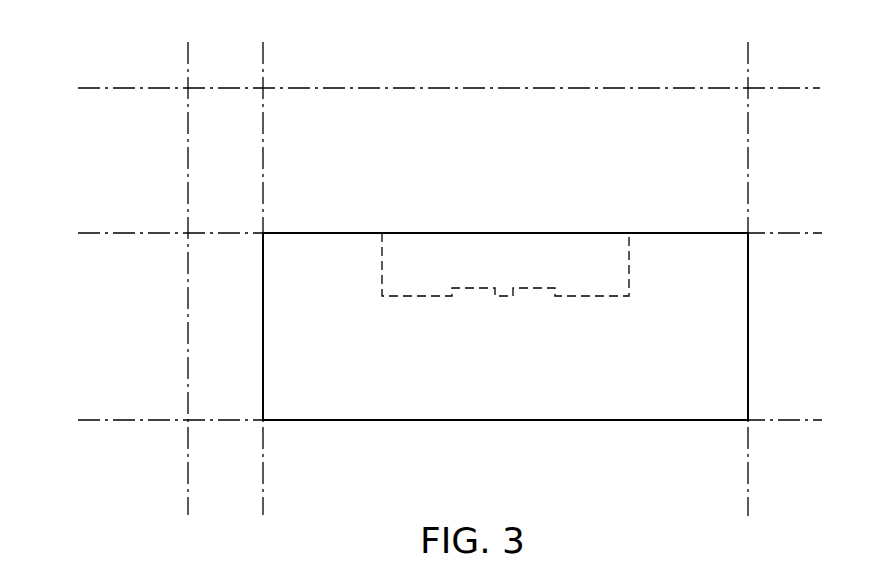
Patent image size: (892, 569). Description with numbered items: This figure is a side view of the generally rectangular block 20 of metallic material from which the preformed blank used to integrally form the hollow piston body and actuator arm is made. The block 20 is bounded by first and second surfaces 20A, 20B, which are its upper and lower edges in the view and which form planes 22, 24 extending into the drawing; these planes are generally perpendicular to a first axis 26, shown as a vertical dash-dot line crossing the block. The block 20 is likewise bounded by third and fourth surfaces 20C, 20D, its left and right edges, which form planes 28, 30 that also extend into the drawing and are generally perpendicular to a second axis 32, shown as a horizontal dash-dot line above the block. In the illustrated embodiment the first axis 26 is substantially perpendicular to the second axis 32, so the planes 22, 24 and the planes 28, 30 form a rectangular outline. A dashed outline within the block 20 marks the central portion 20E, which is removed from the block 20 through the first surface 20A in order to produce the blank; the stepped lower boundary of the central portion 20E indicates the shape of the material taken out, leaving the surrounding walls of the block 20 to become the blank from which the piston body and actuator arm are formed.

The block 20 is at (742, 356).
The first surface 20A is at (686, 233).
The second surface 20B is at (678, 420).
The third surface 20C is at (262, 290).
The fourth surface 20D is at (750, 297).
The central portion 20E is at (384, 255).
The plane 22 is at (91, 233).
The plane 24 is at (95, 420).
The first axis 26 is at (188, 136).
The plane 28 is at (263, 52).
The plane 30 is at (748, 53).
The second axis 32 is at (806, 88).